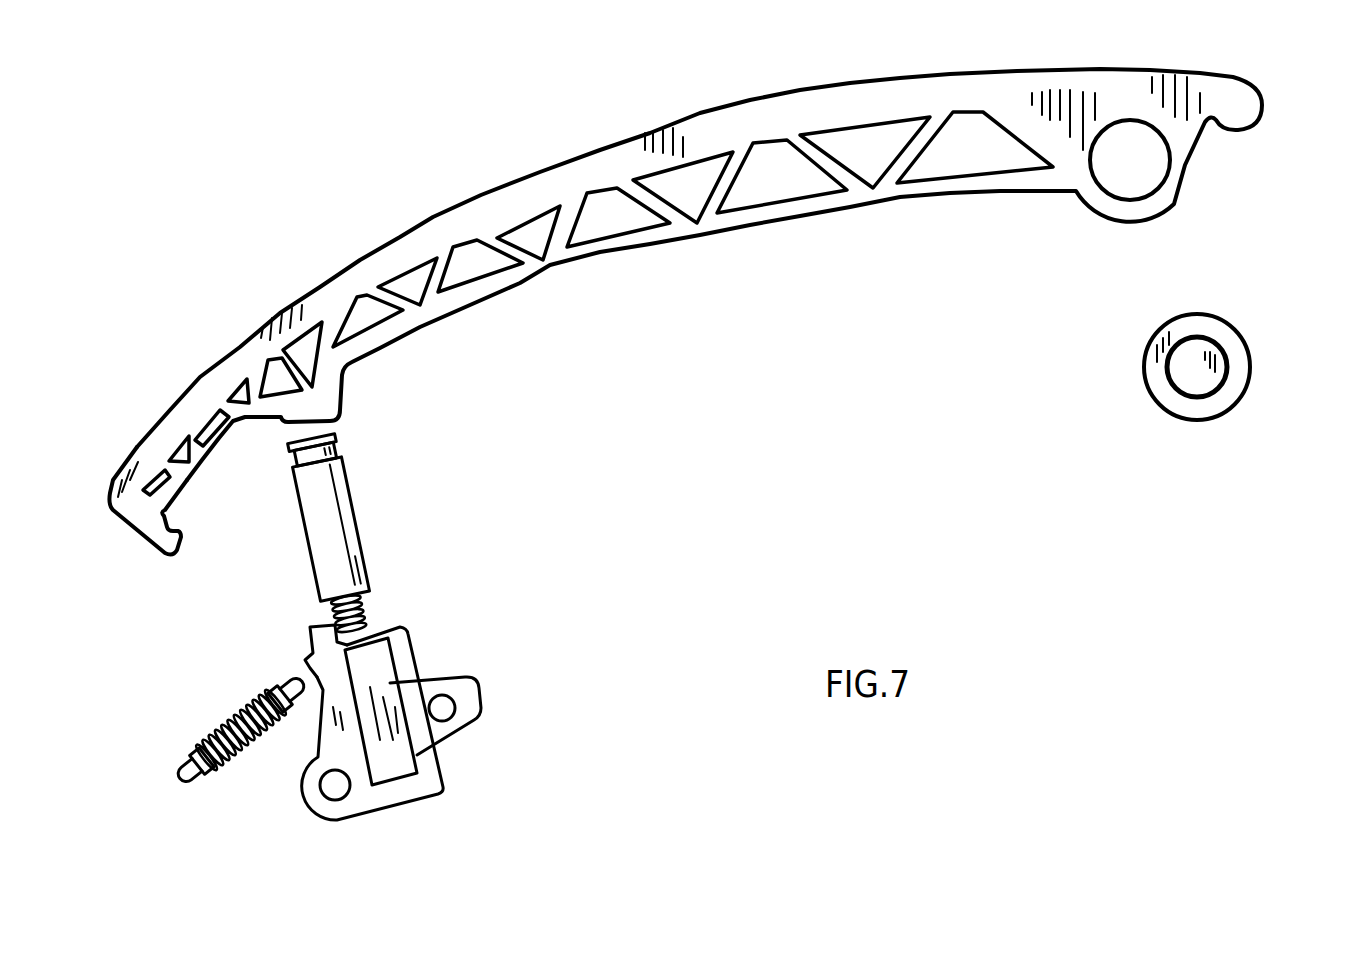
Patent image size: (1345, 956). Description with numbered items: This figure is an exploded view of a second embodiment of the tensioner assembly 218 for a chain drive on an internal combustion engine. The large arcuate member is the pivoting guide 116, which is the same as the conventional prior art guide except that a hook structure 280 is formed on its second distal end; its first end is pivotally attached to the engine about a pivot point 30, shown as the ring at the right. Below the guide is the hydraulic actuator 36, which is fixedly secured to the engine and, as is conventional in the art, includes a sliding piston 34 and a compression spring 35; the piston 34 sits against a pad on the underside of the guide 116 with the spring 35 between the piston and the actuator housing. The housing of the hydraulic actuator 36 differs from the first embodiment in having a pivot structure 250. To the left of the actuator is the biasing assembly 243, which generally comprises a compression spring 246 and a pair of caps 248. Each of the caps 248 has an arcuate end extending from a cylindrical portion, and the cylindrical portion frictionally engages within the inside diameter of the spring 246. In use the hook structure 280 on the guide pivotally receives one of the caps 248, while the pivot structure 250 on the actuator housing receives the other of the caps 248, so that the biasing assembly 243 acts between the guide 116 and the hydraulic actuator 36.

The guide 116 is at (481, 195).
The hook structure 280 is at (147, 543).
The pivot point 30 is at (1153, 390).
The tensioner assembly 218 is at (695, 400).
The sliding piston 34 is at (363, 548).
The compression spring 35 is at (368, 613).
The hydraulic actuator 36 is at (368, 723).
The pivot structure 250 is at (307, 657).
The biasing assembly 243 is at (168, 648).
The compression spring 246 is at (247, 757).
The caps 248 is at (273, 677).